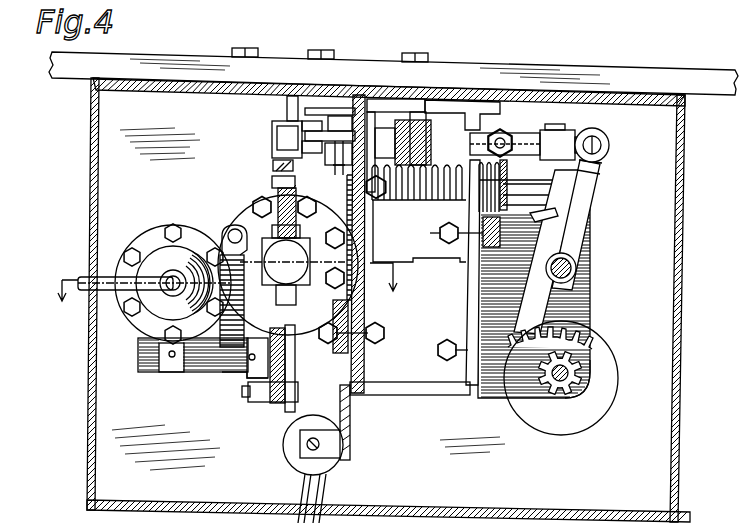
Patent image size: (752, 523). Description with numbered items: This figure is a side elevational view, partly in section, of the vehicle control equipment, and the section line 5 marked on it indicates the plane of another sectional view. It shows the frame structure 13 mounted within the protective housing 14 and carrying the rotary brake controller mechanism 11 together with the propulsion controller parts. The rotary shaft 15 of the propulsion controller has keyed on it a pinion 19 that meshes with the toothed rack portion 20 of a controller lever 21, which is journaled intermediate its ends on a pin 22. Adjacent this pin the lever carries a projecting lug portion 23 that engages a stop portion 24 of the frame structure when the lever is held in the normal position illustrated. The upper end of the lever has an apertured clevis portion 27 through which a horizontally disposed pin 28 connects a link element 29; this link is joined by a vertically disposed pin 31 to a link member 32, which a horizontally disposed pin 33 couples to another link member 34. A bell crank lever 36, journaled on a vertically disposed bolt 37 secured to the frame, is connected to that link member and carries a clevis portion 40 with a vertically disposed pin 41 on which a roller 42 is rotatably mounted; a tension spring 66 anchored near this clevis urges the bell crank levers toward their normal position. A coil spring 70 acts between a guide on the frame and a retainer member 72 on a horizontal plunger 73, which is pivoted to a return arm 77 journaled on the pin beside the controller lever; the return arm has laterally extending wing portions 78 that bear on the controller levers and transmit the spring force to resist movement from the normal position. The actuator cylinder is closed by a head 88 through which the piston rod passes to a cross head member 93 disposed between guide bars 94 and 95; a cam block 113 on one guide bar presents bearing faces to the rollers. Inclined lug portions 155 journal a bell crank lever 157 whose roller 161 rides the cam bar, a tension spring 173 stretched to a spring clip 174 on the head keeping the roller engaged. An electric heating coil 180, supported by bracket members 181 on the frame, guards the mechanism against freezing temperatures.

The section line 5 is at (228, 294).
The rotary brake controller mechanism 11 is at (600, 422).
The frame structure 13 is at (400, 395).
The protective housing 14 is at (218, 506).
The rotary shaft 15 is at (590, 386).
The pinion 19 is at (584, 373).
The toothed rack portion 20 is at (586, 346).
The controller lever 21 is at (592, 300).
The pin 22 is at (576, 268).
The projecting lug portion 23 is at (470, 278).
The stop portion 24 is at (445, 230).
The apertured clevis portion 27 is at (604, 160).
The horizontally disposed pin 28 is at (609, 145).
The link element 29 is at (578, 142).
The vertically disposed pin 31 is at (552, 130).
The link member 32 is at (532, 135).
The horizontally disposed pin 33 is at (500, 130).
The link member 34 is at (466, 102).
The bell crank lever 36 is at (385, 115).
The vertically disposed bolt 37 is at (410, 138).
The clevis portion 40 is at (325, 158).
The vertically disposed pin 41 is at (297, 121).
The roller 42 is at (282, 131).
The tension spring 66 is at (358, 110).
The coil spring 70 is at (380, 205).
The retainer member 72 is at (506, 170).
The plunger 73 is at (590, 186).
The return arm 77 is at (572, 221).
The wing portions 78 is at (533, 214).
The head 88 is at (272, 232).
The cross head member 93 is at (262, 228).
The guide bar 94 is at (285, 200).
The guide bar 95 is at (312, 343).
The cam block 113 is at (273, 162).
The inclined lug portions 155 is at (148, 372).
The bell crank lever 157 is at (262, 363).
The roller 161 is at (275, 400).
The tension spring 173 is at (218, 280).
The spring clip 174 is at (230, 262).
The electric heating coil 180 is at (297, 462).
The bracket members 181 is at (350, 420).